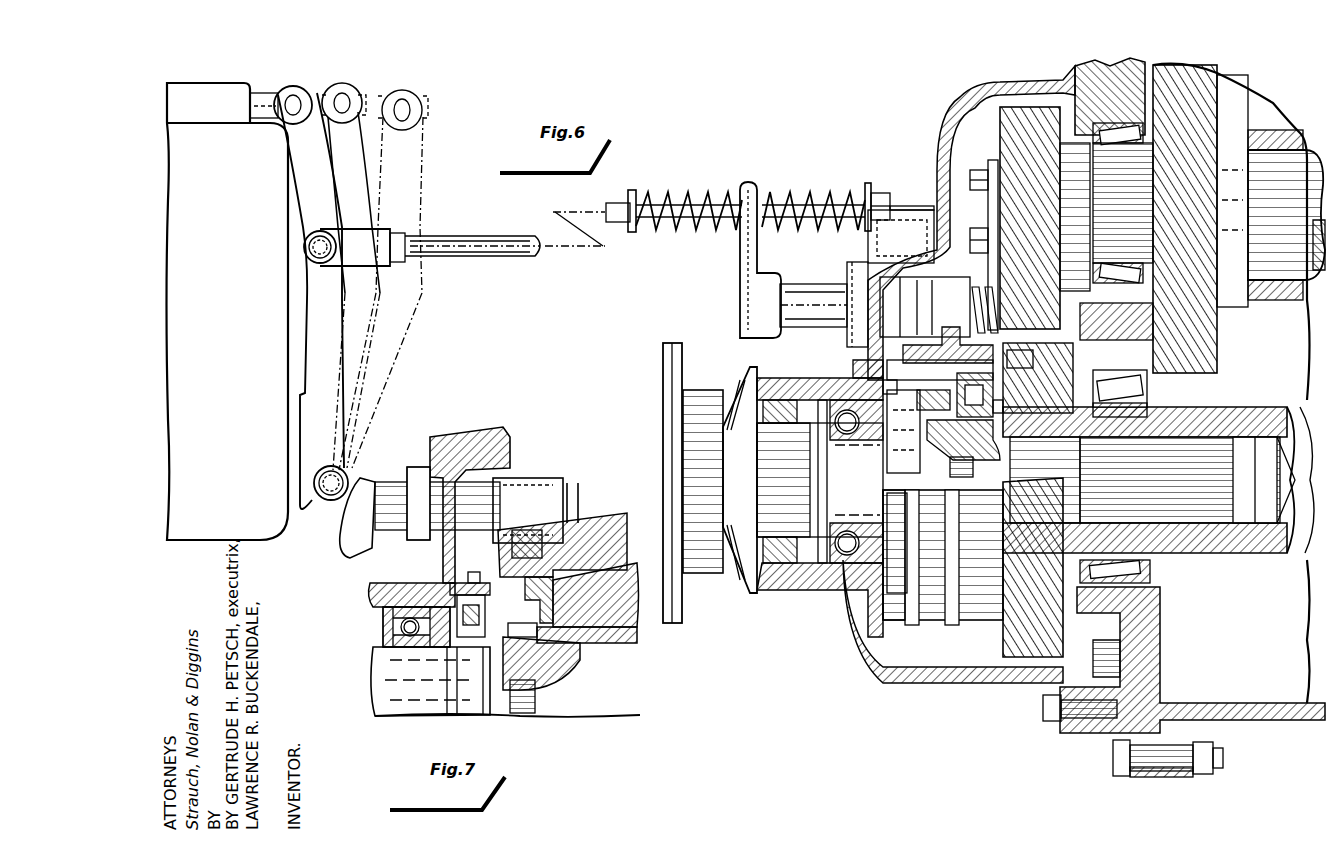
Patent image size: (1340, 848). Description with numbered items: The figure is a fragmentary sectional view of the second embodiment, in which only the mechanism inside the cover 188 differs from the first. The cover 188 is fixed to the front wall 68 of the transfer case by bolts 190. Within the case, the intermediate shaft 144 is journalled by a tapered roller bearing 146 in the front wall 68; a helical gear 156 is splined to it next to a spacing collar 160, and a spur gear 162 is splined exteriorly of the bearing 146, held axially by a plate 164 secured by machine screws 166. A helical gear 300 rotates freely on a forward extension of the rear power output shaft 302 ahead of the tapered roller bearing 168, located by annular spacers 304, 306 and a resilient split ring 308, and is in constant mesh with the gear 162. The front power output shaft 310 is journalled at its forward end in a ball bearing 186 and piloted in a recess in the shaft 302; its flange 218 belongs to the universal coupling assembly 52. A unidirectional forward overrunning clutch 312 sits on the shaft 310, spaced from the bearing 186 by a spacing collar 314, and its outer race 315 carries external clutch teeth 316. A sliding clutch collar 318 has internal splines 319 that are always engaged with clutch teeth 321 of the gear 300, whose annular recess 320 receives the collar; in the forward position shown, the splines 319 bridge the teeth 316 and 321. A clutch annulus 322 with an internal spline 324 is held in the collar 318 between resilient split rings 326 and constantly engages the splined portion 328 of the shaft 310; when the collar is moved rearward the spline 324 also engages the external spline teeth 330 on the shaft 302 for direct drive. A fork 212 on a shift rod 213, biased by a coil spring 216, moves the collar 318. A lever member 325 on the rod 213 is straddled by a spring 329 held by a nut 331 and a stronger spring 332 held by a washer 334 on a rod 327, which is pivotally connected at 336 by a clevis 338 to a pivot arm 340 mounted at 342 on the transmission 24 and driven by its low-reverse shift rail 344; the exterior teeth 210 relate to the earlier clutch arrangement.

In FIG. 6, the vehicle transmission 24 is at (236, 429).
In FIG. 6, the universal coupling assembly 52 is at (652, 369).
In FIG. 6, the front wall 68 is at (1112, 72).
In FIG. 6, the intermediate shaft 144 is at (1300, 224).
In FIG. 6, the tapered roller bearing 146 is at (1140, 133).
In FIG. 6, the helical gear 156 is at (1220, 355).
In FIG. 6, the spacing collar 160 is at (1278, 300).
In FIG. 6, the spur gear 162 is at (1020, 107).
In FIG. 6, the plate 164 is at (988, 170).
In FIG. 6, the machine screws 166 is at (974, 230).
In FIG. 6, the tapered roller bearing 168 is at (1150, 578).
In FIG. 6, the ball type anti-friction bearing 186 is at (840, 567).
In FIG. 6, the cover 188 is at (985, 92).
In FIG. 7, the cover 188 is at (508, 445).
In FIG. 6, the bolts 190 is at (1042, 710).
In FIG. 6, the exterior teeth 210 is at (928, 319).
In FIG. 7, the fork 212 is at (540, 478).
In FIG. 6, the shift rod 213 is at (810, 284).
In FIG. 7, the shift rod 213 is at (386, 492).
In FIG. 6, the coil spring 216 is at (960, 300).
In FIG. 6, the flange 218 is at (685, 403).
In FIG. 6, the helical gear 300 is at (1003, 645).
In FIG. 7, the helical gear 300 is at (615, 575).
In FIG. 6, the rear power output shaft 302 is at (1238, 556).
In FIG. 6, the annular spacer 304 is at (981, 411).
In FIG. 6, the annular spacer 306 is at (1088, 430).
In FIG. 6, the resilient split ring 308 is at (960, 448).
In FIG. 6, the front power output shaft 310 is at (868, 491).
In FIG. 6, the unidirectional forward overrunning clutch 312 is at (908, 425).
In FIG. 7, the unidirectional forward overrunning clutch 312 is at (440, 622).
In FIG. 6, the spacing collar 314 is at (880, 440).
In FIG. 6, the outer race 315 is at (868, 380).
In FIG. 7, the outer race 315 is at (452, 585).
In FIG. 6, the external clutch teeth 316 is at (895, 380).
In FIG. 7, the external clutch teeth 316 is at (476, 572).
In FIG. 6, the clutch collar 318 is at (975, 595).
In FIG. 7, the clutch collar 318 is at (600, 553).
In FIG. 6, the internal splines 319 is at (950, 345).
In FIG. 7, the internal splines 319 is at (560, 535).
In FIG. 6, the annular recess 320 is at (1040, 437).
In FIG. 6, the clutch teeth 321 is at (971, 347).
In FIG. 7, the clutch teeth 321 is at (615, 588).
In FIG. 6, the clutch annulus 322 is at (928, 626).
In FIG. 7, the clutch annulus 322 is at (524, 530).
In FIG. 6, the internal spline 324 is at (975, 400).
In FIG. 6, the lever member 325 is at (740, 262).
In FIG. 6, the resilient split rings 326 is at (954, 387).
In FIG. 6, the rod 327 is at (506, 235).
In FIG. 6, the externally splined portion 328 is at (1000, 470).
In FIG. 7, the externally splined portion 328 is at (555, 672).
In FIG. 6, the spring 329 is at (796, 192).
In FIG. 6, the external spline teeth 330 is at (1060, 440).
In FIG. 7, the external spline teeth 330 is at (600, 632).
In FIG. 6, the nut 331 is at (876, 186).
In FIG. 6, the spring 332 is at (682, 190).
In FIG. 6, the washer 334 is at (634, 192).
In FIG. 6, the pivotal connection 336 is at (310, 250).
In FIG. 6, the clevis 338 is at (390, 270).
In FIG. 6, the pivot arm 340 is at (332, 391).
In FIG. 6, the pivotal mounting 342 is at (345, 470).
In FIG. 6, the low-reverse shift rail 344 is at (262, 92).